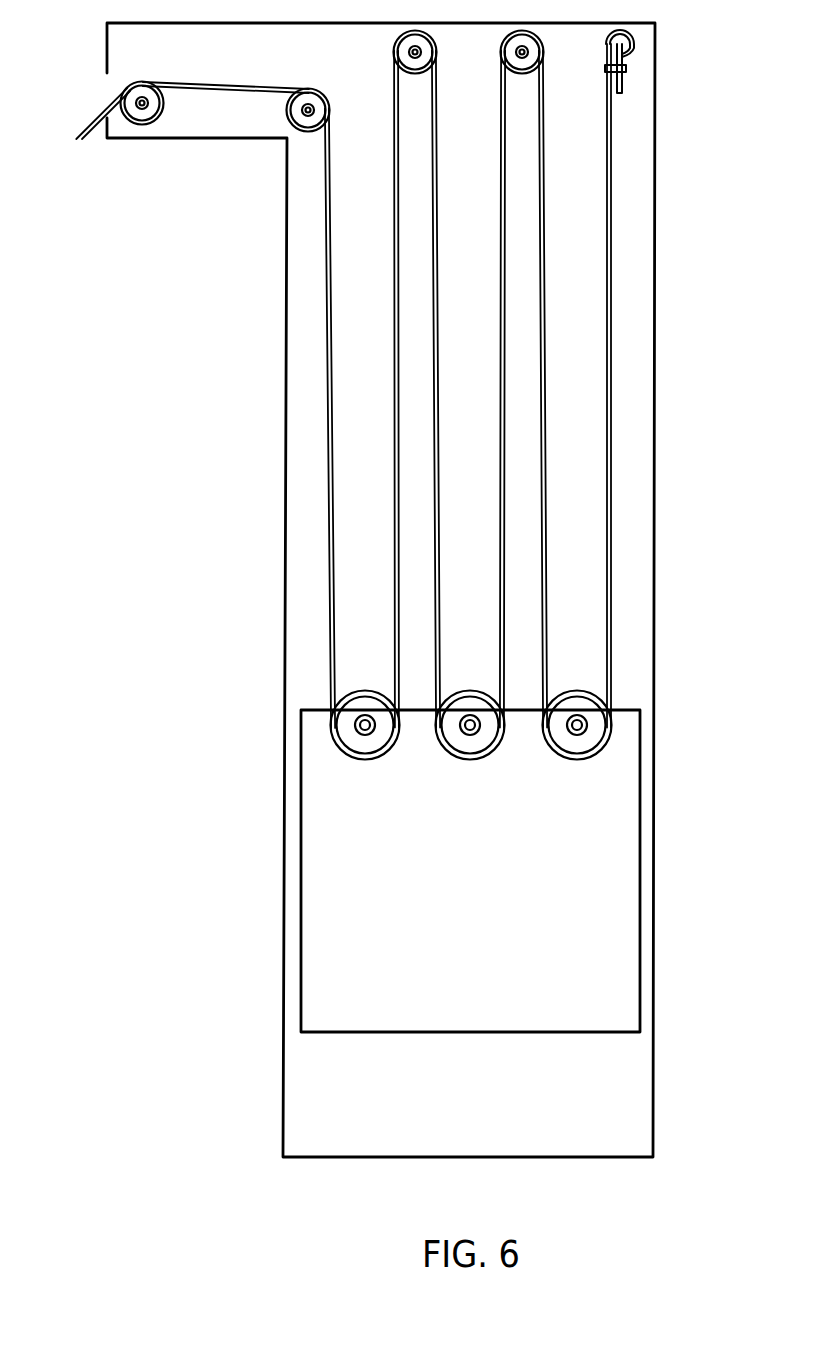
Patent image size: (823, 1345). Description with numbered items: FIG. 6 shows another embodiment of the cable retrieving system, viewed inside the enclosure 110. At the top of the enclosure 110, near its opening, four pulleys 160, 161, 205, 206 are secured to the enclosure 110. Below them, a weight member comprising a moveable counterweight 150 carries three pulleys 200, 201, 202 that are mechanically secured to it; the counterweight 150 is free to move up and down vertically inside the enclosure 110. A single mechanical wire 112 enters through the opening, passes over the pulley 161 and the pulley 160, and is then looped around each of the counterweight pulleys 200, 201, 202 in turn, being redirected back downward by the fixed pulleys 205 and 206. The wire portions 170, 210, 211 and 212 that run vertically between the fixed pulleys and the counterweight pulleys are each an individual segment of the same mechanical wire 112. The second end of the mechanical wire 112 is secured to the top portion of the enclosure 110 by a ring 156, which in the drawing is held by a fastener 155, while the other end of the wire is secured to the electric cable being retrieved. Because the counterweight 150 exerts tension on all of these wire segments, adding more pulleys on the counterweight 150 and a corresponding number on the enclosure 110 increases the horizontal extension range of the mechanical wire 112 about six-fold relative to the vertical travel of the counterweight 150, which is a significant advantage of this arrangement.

The enclosure 110 is at (643, 457).
The mechanical wire 112 is at (96, 113).
The moveable counterweight 150 is at (308, 985).
The fastener plate 155 is at (606, 69).
The ring 156 is at (603, 37).
The pulley 160 is at (297, 111).
The pulley 161 is at (152, 110).
The first portion of the mechanical wire 170 is at (335, 400).
The pulley 200 is at (365, 743).
The pulley 201 is at (470, 743).
The pulley 202 is at (577, 743).
The pulley 205 is at (396, 56).
The pulley 206 is at (501, 56).
The wire portion 210 is at (440, 311).
The wire portion 211 is at (548, 330).
The wire portion 212 is at (611, 257).